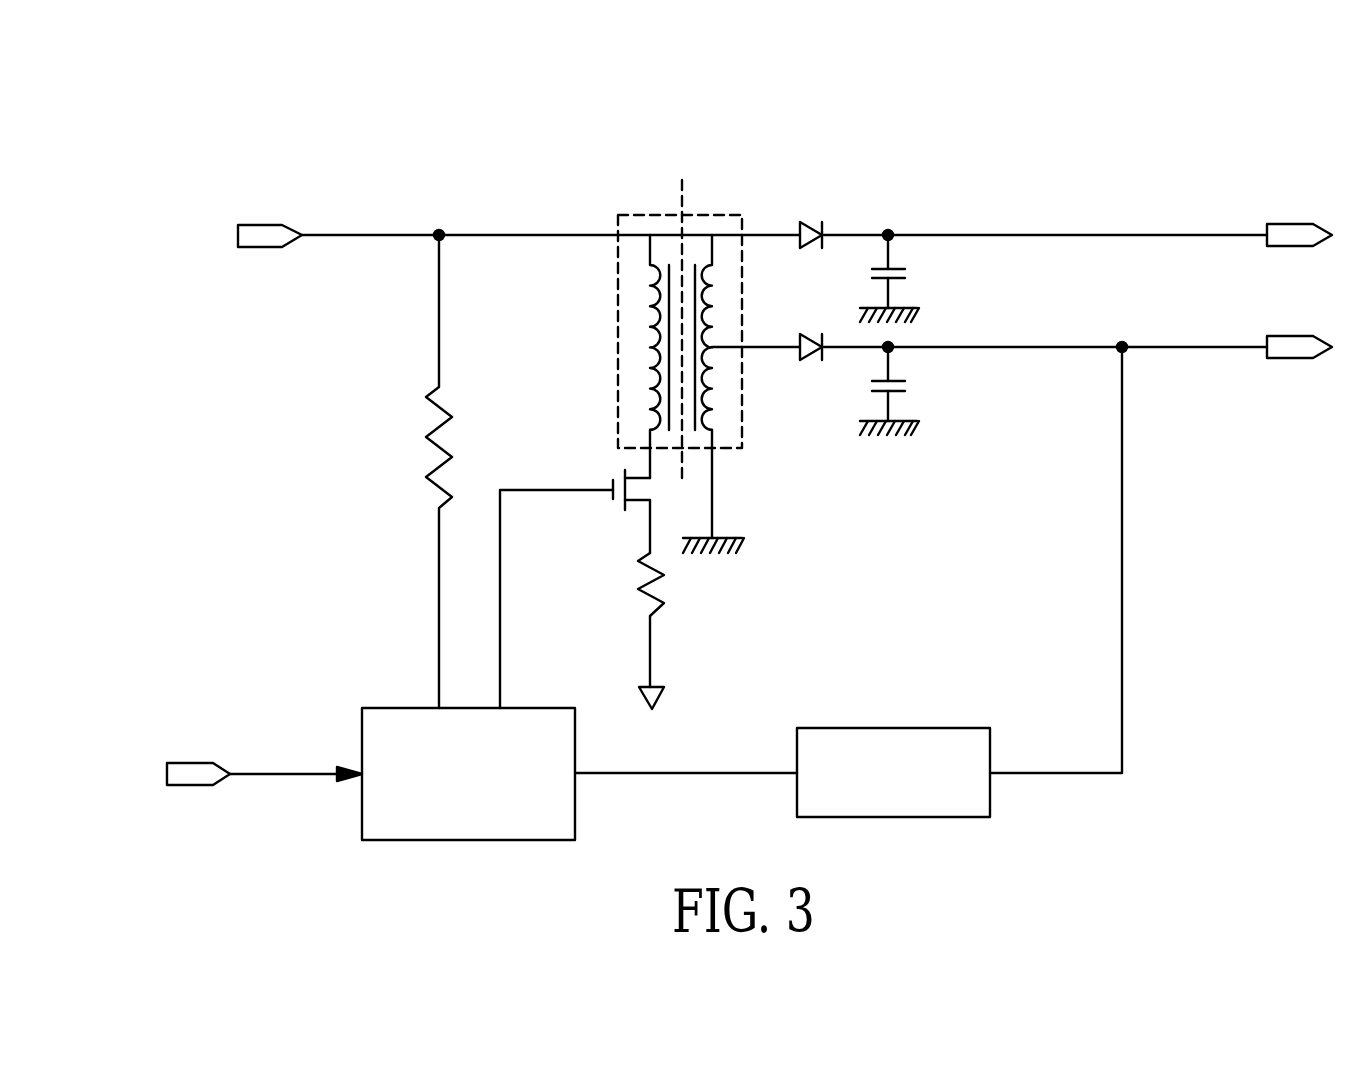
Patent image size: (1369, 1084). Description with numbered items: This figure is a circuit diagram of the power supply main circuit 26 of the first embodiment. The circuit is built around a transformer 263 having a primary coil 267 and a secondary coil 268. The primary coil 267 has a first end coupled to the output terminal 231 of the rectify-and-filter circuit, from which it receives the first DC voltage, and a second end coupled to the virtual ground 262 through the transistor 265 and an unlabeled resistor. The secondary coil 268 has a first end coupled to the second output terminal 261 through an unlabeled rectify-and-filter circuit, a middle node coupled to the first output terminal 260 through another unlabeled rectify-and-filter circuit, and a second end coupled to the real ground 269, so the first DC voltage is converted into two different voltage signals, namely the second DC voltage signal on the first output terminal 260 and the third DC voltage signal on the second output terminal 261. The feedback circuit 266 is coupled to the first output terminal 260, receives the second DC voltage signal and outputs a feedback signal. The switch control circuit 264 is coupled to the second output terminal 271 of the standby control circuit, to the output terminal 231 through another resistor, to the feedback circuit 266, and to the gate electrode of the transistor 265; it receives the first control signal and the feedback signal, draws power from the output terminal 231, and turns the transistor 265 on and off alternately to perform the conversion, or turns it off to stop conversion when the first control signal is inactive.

The power supply main circuit 26 is at (893, 175).
The output terminal of the rectify-and-filter circuit 231 is at (260, 225).
The first output terminal 260 is at (1292, 358).
The second output terminal 261 is at (1292, 224).
The virtual ground 262 is at (662, 695).
The transformer 263 is at (675, 307).
The switch control circuit 264 is at (402, 708).
The transistor 265 is at (618, 478).
The feedback circuit 266 is at (991, 795).
The primary coil 267 is at (657, 315).
The secondary coil 268 is at (708, 277).
The real ground 269 is at (728, 539).
The second output terminal of the standby control circuit 271 is at (167, 773).